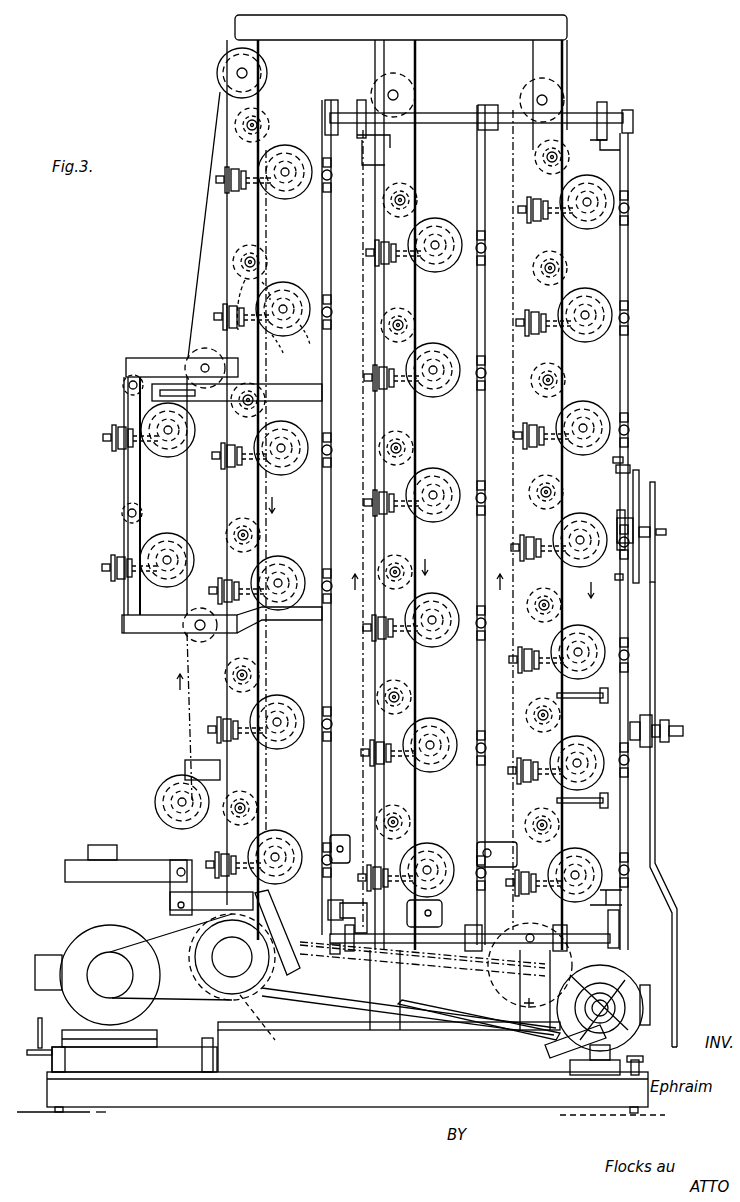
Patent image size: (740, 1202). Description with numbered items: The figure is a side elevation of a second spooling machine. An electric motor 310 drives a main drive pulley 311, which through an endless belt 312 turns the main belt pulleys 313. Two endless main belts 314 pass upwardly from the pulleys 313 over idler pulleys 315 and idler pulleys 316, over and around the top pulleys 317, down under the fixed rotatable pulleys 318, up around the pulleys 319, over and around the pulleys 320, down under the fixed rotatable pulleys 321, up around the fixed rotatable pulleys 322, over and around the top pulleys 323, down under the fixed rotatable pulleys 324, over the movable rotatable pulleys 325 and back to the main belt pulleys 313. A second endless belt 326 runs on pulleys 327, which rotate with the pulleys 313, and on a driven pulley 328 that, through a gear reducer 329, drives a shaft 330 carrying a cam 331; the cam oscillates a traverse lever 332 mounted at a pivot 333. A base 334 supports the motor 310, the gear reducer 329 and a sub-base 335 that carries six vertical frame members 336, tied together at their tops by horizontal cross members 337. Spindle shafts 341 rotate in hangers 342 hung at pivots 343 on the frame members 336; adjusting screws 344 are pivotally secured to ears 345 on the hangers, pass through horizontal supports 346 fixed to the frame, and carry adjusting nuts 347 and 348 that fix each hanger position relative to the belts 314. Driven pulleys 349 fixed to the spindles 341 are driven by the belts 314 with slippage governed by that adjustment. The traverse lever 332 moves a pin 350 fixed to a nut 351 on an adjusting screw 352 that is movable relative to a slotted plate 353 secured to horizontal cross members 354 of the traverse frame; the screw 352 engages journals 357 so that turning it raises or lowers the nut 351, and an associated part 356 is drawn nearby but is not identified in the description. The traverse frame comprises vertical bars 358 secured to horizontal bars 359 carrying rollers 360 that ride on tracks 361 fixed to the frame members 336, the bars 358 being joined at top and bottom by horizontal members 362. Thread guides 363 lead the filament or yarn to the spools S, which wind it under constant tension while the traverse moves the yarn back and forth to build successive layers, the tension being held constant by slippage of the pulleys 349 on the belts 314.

The electric motor 310 is at (80, 935).
The main drive pulley 311 is at (112, 960).
The endless belt 312 is at (190, 998).
The main belt pulleys 313 is at (236, 995).
The endless main belts 314 is at (188, 676).
The idler pulleys 315 is at (198, 640).
The idler pulleys 316 is at (195, 358).
The top pulleys 317 is at (220, 72).
The fixed rotatable pulleys 318 is at (280, 838).
The pulleys 319 is at (340, 835).
The pulleys 320 is at (415, 90).
The fixed rotatable pulleys 321 is at (462, 900).
The fixed rotatable pulleys 322 is at (482, 842).
The top pulleys 323 is at (565, 97).
The fixed rotatable pulleys 324 is at (445, 925).
The movable rotatable pulleys 325 is at (345, 1008).
The endless belt 326 is at (425, 1028).
The pulleys 327 is at (277, 1025).
The driven pulley 328 is at (522, 1005).
The gear reducer 329 is at (560, 1058).
The shaft 330 is at (630, 1072).
The cam 331 is at (630, 975).
The traverse lever 332 is at (657, 835).
The pivot 333 is at (684, 731).
The base 334 is at (322, 1107).
The sub-base 335 is at (392, 1035).
The vertical frame members 336 is at (260, 768).
The horizontal cross members 337 is at (330, 40).
The spindle shafts 341 is at (284, 305).
The hangers 342 is at (268, 285).
The pivot 343 is at (245, 262).
The adjusting screws 344 is at (205, 360).
The ears 345 is at (295, 352).
The horizontal supports 346 is at (238, 300).
The adjusting nut 347 is at (215, 312).
The adjusting nut 348 is at (233, 262).
The driven pulleys 349 is at (445, 272).
The pin 350 is at (657, 505).
The nut 351 is at (617, 525).
The adjusting screw 352 is at (631, 440).
The slotted plate 353 is at (636, 540).
The horizontal cross members 354 is at (640, 475).
The bracket 356 is at (623, 460).
The journals 357 is at (616, 468).
The vertical bars 358 is at (630, 372).
The horizontal bars 359 is at (326, 108).
The rollers 360 is at (362, 100).
The tracks 361 is at (365, 166).
The horizontal members 362 is at (448, 113).
The thread guides 363 is at (631, 210).
The spools S is at (288, 150).